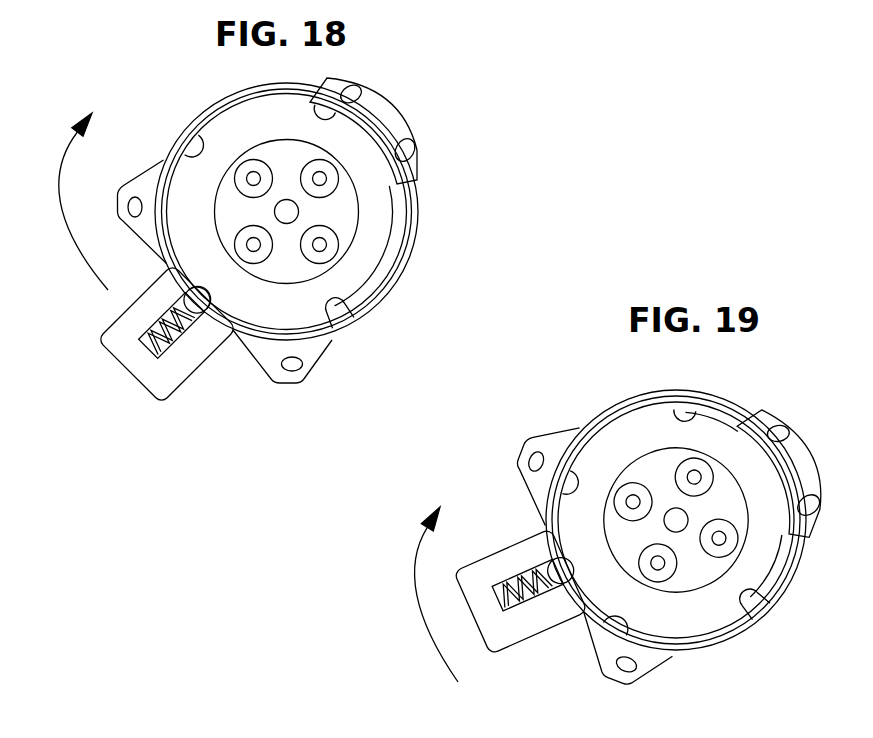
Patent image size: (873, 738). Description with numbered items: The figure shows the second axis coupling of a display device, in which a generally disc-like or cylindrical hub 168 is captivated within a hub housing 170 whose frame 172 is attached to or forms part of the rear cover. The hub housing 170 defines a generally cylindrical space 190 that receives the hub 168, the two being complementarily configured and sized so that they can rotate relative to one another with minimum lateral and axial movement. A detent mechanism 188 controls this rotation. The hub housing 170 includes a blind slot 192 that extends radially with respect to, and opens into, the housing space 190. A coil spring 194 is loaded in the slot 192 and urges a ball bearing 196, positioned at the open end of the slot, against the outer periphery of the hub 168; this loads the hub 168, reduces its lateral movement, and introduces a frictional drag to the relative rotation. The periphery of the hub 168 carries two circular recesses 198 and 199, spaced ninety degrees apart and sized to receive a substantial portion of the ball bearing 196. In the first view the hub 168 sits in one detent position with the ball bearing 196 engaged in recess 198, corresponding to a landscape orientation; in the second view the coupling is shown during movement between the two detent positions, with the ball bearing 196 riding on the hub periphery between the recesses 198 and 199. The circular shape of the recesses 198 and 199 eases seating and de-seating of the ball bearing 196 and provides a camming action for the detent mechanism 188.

In FIG. 18, the hub 168 is at (367, 250).
In FIG. 19, the hub 168 is at (643, 425).
In FIG. 18, the hub housing 170 is at (456, 224).
In FIG. 19, the hub housing 170 is at (823, 391).
In FIG. 18, the frame 172 is at (355, 317).
In FIG. 19, the frame 172 is at (733, 637).
In FIG. 18, the detent mechanism 188 is at (212, 378).
In FIG. 19, the detent mechanism 188 is at (563, 641).
In FIG. 18, the cylindrical space 190 is at (372, 290).
In FIG. 19, the cylindrical space 190 is at (772, 583).
In FIG. 18, the blind slot 192 is at (155, 318).
In FIG. 19, the blind slot 192 is at (512, 580).
In FIG. 18, the coil spring 194 is at (145, 340).
In FIG. 19, the coil spring 194 is at (517, 607).
In FIG. 18, the ball bearing 196 is at (198, 302).
In FIG. 19, the ball bearing 196 is at (555, 568).
In FIG. 18, the circular recess 198 is at (213, 303).
In FIG. 19, the circular recess 198 is at (630, 620).
In FIG. 18, the circular recess 199 is at (188, 145).
In FIG. 19, the circular recess 199 is at (568, 485).